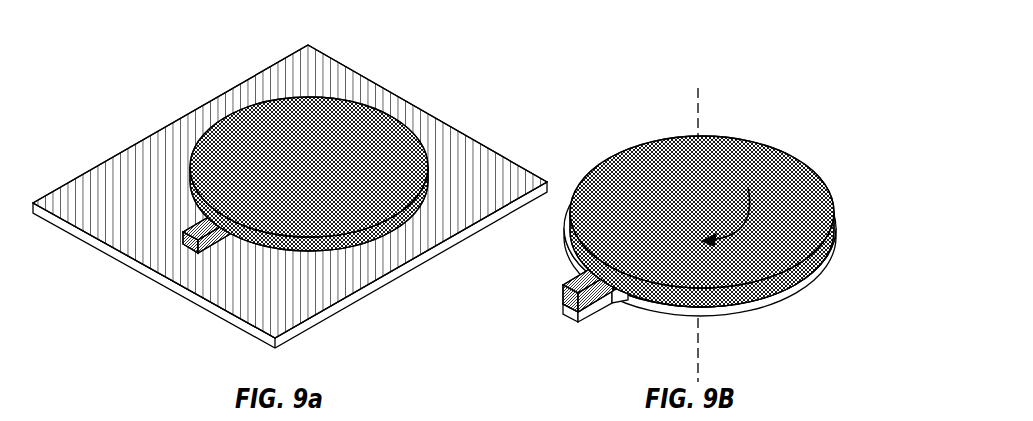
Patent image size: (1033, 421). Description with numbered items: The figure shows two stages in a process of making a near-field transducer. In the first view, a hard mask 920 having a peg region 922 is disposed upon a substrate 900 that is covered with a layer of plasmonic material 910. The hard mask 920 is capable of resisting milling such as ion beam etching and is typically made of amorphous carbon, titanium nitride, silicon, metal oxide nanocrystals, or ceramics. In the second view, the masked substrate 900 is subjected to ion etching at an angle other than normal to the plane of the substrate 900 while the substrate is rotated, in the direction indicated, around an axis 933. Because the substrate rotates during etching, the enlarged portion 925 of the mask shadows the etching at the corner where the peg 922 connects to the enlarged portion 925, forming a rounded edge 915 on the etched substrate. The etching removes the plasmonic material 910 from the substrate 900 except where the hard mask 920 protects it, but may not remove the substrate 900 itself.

In FIG. 9a, the substrate 900 is at (234, 318).
In FIG. 9a, the plasmonic material 910 is at (171, 148).
In FIG. 9B, the rounded edge 915 is at (617, 298).
In FIG. 9a, the hard mask 920 is at (319, 120).
In FIG. 9B, the hard mask 920 is at (733, 160).
In FIG. 9a, the peg region 922 is at (183, 239).
In FIG. 9B, the peg region 922 is at (563, 284).
In FIG. 9B, the enlarged portion 925 is at (768, 312).
In FIG. 9B, the axis 933 is at (695, 120).